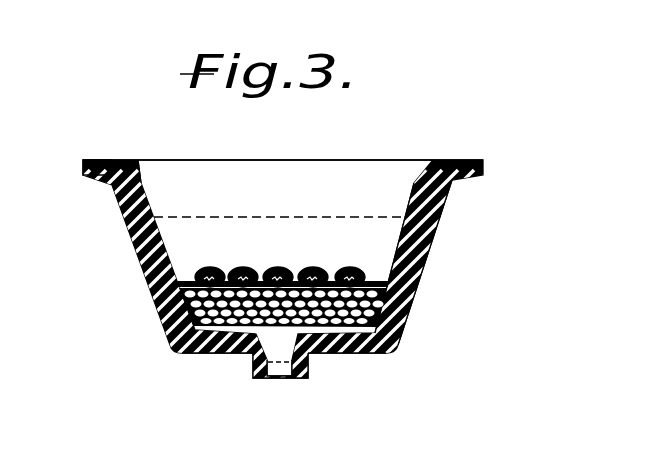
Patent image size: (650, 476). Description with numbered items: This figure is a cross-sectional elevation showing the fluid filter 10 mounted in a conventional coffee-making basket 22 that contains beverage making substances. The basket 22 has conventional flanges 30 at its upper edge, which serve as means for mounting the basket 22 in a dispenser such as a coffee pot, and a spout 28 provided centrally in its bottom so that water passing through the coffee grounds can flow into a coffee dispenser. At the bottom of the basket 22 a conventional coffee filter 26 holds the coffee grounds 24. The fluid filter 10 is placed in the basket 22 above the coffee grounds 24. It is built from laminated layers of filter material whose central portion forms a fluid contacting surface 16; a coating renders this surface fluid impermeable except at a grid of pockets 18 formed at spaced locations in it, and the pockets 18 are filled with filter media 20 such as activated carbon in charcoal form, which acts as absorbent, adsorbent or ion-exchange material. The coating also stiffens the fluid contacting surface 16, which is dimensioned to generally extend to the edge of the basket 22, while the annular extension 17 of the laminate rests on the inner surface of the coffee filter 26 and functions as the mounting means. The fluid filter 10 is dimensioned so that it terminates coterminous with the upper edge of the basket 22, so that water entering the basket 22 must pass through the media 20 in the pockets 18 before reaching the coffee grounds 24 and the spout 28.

The fluid filter 10 is at (309, 273).
The fluid contacting surface 16 is at (297, 270).
The annular extension 17 is at (154, 178).
The pockets 18 is at (320, 270).
The filter media 20 is at (227, 271).
The basket 22 is at (426, 224).
The coffee grounds 24 is at (347, 332).
The coffee filter 26 is at (398, 312).
The spout 28 is at (283, 380).
The flanges 30 is at (94, 177).